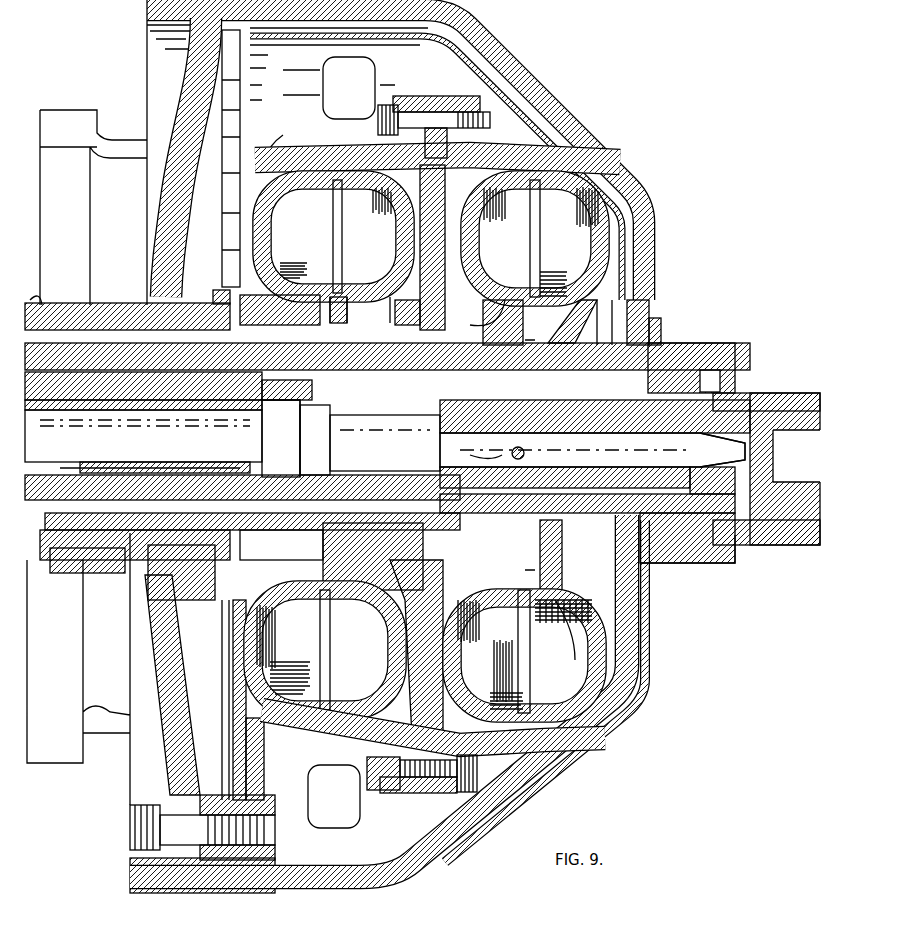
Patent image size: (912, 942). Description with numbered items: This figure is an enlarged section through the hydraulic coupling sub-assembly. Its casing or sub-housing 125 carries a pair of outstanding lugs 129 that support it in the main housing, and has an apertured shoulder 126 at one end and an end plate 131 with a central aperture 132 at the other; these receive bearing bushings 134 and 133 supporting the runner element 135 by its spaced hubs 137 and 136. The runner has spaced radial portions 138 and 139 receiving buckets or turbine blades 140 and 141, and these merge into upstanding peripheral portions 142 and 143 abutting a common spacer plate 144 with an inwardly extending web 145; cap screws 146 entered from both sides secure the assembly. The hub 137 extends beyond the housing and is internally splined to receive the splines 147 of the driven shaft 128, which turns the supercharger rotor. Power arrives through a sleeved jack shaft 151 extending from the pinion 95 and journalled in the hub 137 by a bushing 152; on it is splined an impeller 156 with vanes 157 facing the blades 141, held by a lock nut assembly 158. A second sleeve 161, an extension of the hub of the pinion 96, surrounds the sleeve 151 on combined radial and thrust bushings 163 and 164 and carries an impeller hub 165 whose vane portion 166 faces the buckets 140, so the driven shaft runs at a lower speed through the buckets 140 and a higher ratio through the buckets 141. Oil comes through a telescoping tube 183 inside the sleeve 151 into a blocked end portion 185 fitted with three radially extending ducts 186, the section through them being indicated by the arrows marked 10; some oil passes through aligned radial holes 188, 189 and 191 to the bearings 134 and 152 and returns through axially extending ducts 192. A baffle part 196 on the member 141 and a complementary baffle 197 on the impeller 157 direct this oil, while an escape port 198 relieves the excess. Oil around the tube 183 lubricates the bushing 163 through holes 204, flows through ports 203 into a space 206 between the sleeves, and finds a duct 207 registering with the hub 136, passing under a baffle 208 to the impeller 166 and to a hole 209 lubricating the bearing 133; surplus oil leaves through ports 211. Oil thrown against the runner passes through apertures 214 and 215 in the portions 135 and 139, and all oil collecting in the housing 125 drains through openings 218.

The sub-housing 125 is at (540, 92).
The radial portion 139 is at (655, 222).
The radial hole 191 is at (686, 320).
The hub 137 is at (706, 350).
The splines 147 is at (765, 393).
The driven shaft 128 is at (793, 398).
The hub 136 is at (210, 282).
The radial portion 138 is at (224, 192).
The runner element 135 is at (278, 155).
The outstanding lugs 129 is at (108, 108).
The upstanding peripheral portion 143 is at (478, 110).
The upstanding peripheral portion 142 is at (382, 75).
The spacer plate 144 is at (432, 96).
The cap screws 146 is at (490, 129).
The buckets 140 is at (296, 250).
The impeller vanes 166 is at (368, 250).
The web 145 is at (400, 285).
The impeller vanes 157 is at (504, 254).
The buckets 141 is at (576, 254).
The impeller 156 is at (505, 325).
The impeller hub 165 is at (398, 314).
The radial and thrust bushing 163 is at (62, 302).
The pinion 95 is at (46, 325).
The lock nut assembly 158 is at (618, 392).
The telescoping tube 183 is at (262, 445).
The holes 204 is at (68, 468).
The ports 203 is at (160, 468).
The duct 207 is at (215, 475).
The space 206 is at (278, 410).
The second sleeve 161 is at (330, 418).
The sleeved jack shaft 151 is at (440, 420).
The radial and thrust bushing 164 is at (448, 430).
The blocked end portion 185 is at (575, 450).
The radially extending ducts 186 is at (508, 462).
The baffle 197 is at (560, 478).
The radial hole 188 is at (640, 448).
The radial hole 189 is at (718, 470).
The axially extending ducts 192 is at (565, 500).
The bearing bushing 133 is at (148, 572).
The aperture 132 is at (148, 608).
The pinion 96 is at (84, 565).
The baffle 208 is at (310, 555).
The hole 209 is at (188, 600).
The end plate 131 is at (168, 768).
The bushing 152 is at (658, 575).
The bearing bushing 134 is at (690, 563).
The apertured shoulder 126 is at (725, 540).
The ports 211 is at (270, 612).
The aperture 215 is at (468, 728).
The aperture 214 is at (400, 730).
The baffle part 196 is at (552, 598).
The escape port 198 is at (582, 630).
The openings 218 is at (343, 820).
The clearance 10 is at (541, 455).